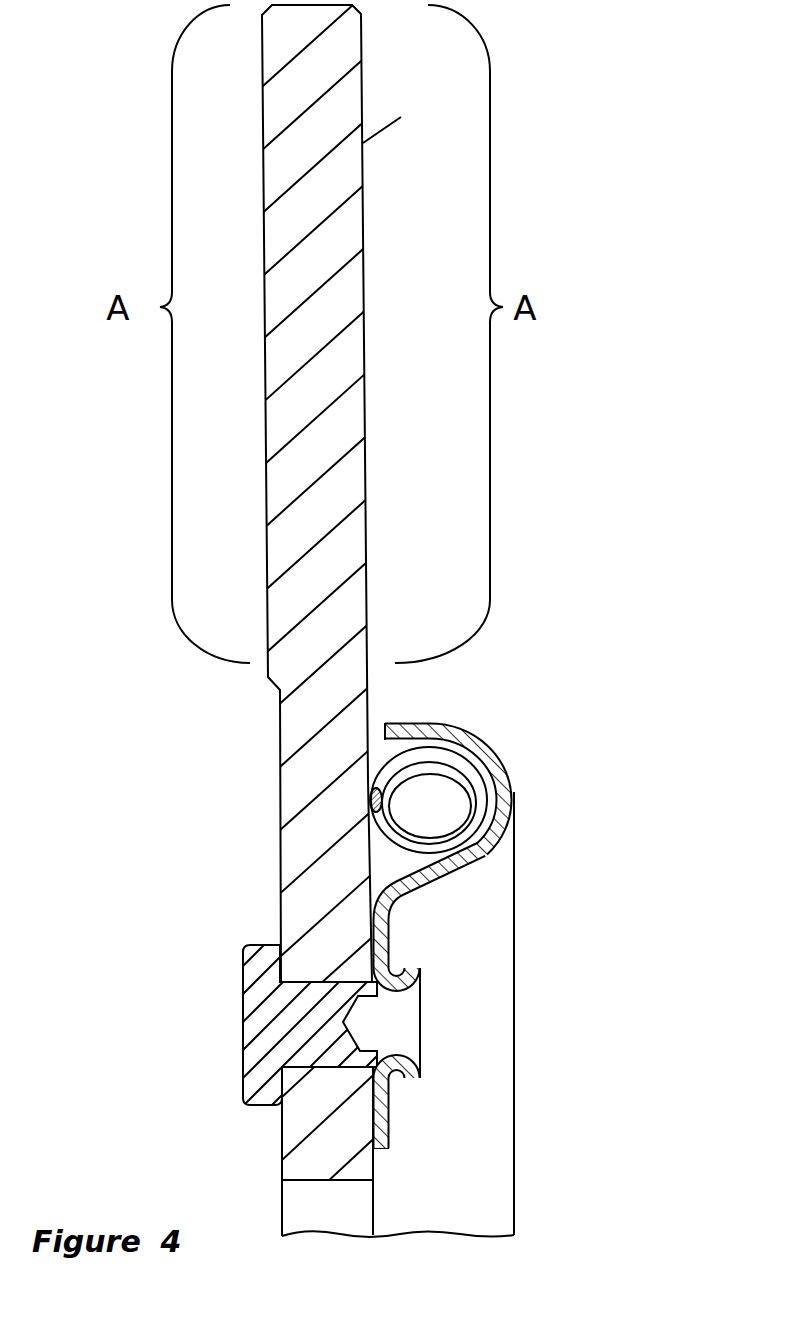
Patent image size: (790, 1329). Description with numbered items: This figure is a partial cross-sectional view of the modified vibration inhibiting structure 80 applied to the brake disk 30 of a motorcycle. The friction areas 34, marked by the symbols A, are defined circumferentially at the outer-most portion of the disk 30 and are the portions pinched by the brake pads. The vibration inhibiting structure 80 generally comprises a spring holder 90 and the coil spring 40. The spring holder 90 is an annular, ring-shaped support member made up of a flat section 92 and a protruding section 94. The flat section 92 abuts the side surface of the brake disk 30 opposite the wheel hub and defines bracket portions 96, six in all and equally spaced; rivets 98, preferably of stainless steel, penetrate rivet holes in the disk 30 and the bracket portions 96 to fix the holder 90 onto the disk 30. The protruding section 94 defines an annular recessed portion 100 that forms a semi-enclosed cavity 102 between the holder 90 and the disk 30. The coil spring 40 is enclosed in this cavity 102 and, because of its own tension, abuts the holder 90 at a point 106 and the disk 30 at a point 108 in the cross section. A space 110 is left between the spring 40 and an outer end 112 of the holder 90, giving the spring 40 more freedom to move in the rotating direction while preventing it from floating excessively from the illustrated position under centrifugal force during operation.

The brake disk 30 is at (365, 218).
The friction areas 34 is at (250, 116).
The coil spring 40 is at (393, 847).
The vibration inhibiting structure 80 is at (587, 694).
The spring holder 90 is at (514, 1032).
The flat section 92 is at (418, 962).
The protruding section 94 is at (500, 747).
The bracket portions 96 is at (392, 1122).
The rivets 98 is at (243, 1033).
The recessed portion 100 is at (475, 782).
The cavity 102 is at (403, 862).
The point 106 is at (488, 852).
The point 108 is at (372, 796).
The space 110 is at (457, 747).
The outer end 112 is at (402, 723).